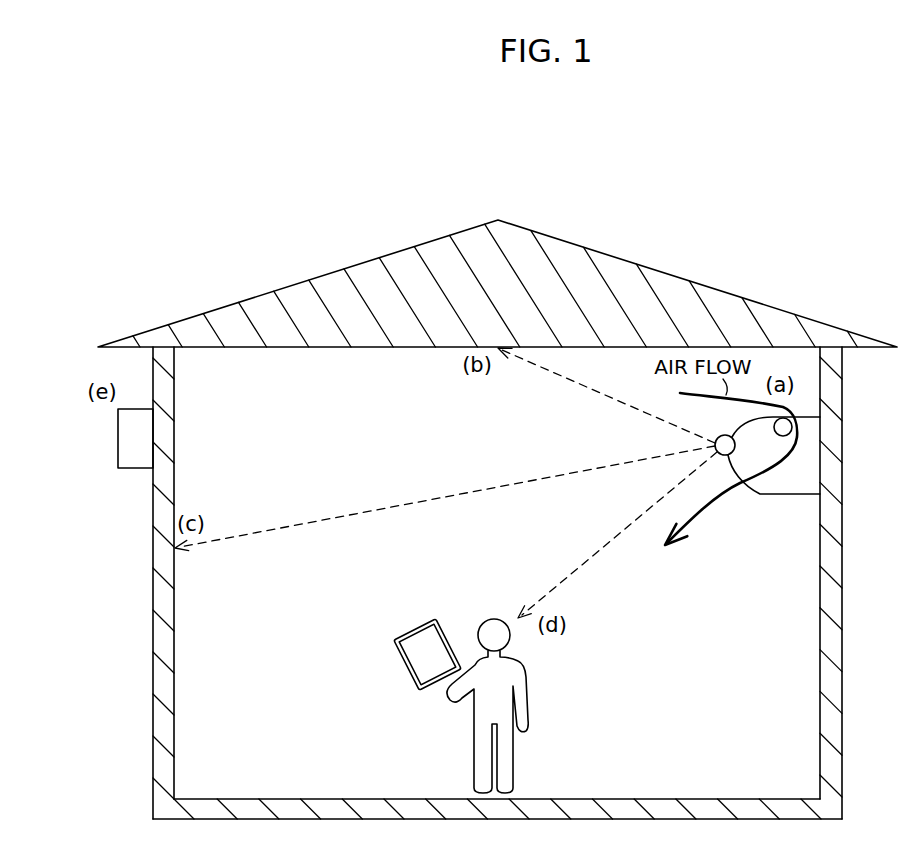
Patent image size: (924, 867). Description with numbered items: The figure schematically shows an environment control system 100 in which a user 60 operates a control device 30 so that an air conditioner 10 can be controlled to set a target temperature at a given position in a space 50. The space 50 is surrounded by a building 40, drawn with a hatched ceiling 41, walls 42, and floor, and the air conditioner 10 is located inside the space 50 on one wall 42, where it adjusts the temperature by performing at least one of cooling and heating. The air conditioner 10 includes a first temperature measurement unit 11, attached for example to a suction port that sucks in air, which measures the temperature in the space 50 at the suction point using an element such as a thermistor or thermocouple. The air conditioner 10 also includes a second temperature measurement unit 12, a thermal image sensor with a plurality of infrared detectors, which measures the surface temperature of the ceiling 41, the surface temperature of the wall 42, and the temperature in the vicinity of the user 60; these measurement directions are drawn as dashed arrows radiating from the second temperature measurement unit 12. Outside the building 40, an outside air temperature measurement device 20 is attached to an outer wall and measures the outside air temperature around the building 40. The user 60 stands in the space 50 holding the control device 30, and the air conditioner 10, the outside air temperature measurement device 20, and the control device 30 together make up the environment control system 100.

The environment control system 100 is at (786, 221).
The air conditioner 10 is at (766, 487).
The first temperature measurement unit 11 is at (792, 427).
The second temperature measurement unit 12 is at (711, 440).
The outside air temperature measurement device 20 is at (130, 441).
The control device 30 is at (397, 639).
The building 40 is at (760, 320).
The ceiling 41 is at (290, 338).
The wall 42 is at (168, 616).
The space 50 is at (692, 672).
The user 60 is at (523, 668).